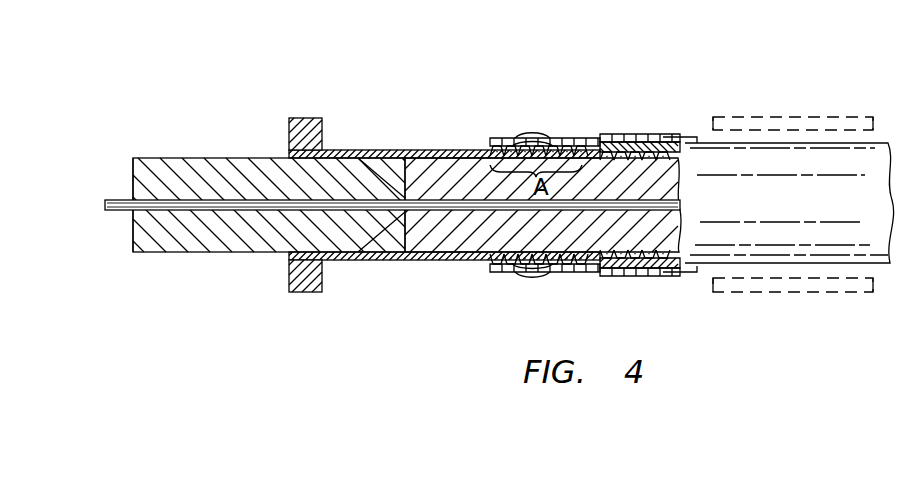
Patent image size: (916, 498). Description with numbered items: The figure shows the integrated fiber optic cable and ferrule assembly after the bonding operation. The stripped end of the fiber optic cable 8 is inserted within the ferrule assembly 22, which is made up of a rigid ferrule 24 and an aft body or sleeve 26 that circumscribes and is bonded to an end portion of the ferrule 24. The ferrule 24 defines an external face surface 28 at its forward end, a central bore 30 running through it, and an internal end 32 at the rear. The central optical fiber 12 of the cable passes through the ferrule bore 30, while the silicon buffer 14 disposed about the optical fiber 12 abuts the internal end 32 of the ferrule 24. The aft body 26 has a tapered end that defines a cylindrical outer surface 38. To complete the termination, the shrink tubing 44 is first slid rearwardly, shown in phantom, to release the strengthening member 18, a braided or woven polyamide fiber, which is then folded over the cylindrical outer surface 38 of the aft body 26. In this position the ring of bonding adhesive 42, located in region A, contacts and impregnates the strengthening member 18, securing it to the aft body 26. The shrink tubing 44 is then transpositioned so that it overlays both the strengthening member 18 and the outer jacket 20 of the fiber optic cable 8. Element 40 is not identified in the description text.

The fiber optic cable 8 is at (605, 78).
The optical fiber 12 is at (133, 205).
The silicon buffer 14 is at (440, 233).
The strengthening member 18 is at (568, 264).
The outer jacket 20 is at (642, 262).
The ferrule assembly 22 is at (262, 75).
The rigid ferrule 24 is at (210, 172).
The aft body 26 is at (422, 152).
The external face surface 28 is at (132, 234).
The central bore 30 is at (178, 203).
The internal end 32 is at (370, 239).
The cylindrical outer surface 38 is at (503, 140).
The crimp bands 40 is at (535, 140).
The ring of bonding adhesive 42 is at (398, 186).
The shrink tubing 44 is at (712, 118).